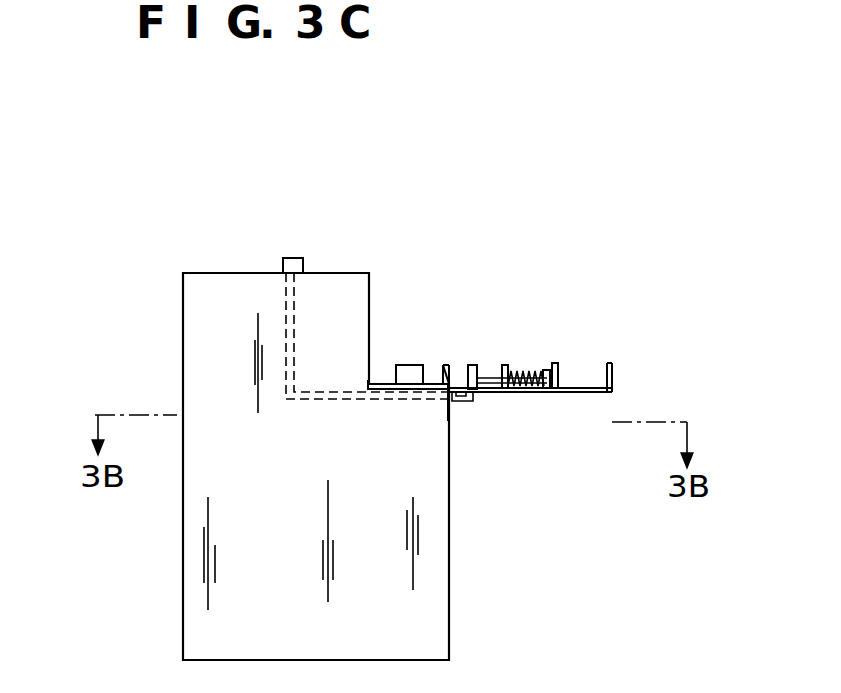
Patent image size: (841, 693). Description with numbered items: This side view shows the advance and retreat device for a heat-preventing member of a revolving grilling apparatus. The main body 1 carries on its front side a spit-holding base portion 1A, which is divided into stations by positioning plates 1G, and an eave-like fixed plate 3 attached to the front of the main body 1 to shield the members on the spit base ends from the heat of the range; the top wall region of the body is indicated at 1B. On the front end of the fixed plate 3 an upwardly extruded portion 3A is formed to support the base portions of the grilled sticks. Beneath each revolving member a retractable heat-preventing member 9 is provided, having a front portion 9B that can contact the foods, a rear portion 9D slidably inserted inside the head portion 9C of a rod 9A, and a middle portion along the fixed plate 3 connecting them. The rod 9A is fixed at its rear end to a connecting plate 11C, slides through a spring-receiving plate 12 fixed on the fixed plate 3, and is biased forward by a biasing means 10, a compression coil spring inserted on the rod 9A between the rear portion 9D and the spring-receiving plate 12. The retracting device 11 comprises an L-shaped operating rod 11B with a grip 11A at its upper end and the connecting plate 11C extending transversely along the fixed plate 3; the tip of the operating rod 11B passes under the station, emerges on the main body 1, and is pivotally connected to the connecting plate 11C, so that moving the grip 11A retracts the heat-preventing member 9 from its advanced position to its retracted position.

The main body 1 is at (183, 608).
The spit-holding base portion 1A is at (382, 383).
The top wall 1B is at (232, 273).
The positioning plate 1G is at (412, 373).
The fixed plate 3 is at (494, 395).
The upwardly extruded portion 3A is at (548, 370).
The heat-preventing member 9 is at (580, 394).
The rod 9A is at (500, 393).
The front portion 9B is at (613, 375).
The head portion 9C is at (556, 363).
The rear portion 9D is at (540, 394).
The biasing means 10 is at (530, 374).
The retracting device 11 is at (323, 273).
The grip 11A is at (283, 262).
The operating rod 11B is at (286, 323).
The connecting plate 11C is at (476, 365).
The spring-receiving plate 12 is at (505, 365).